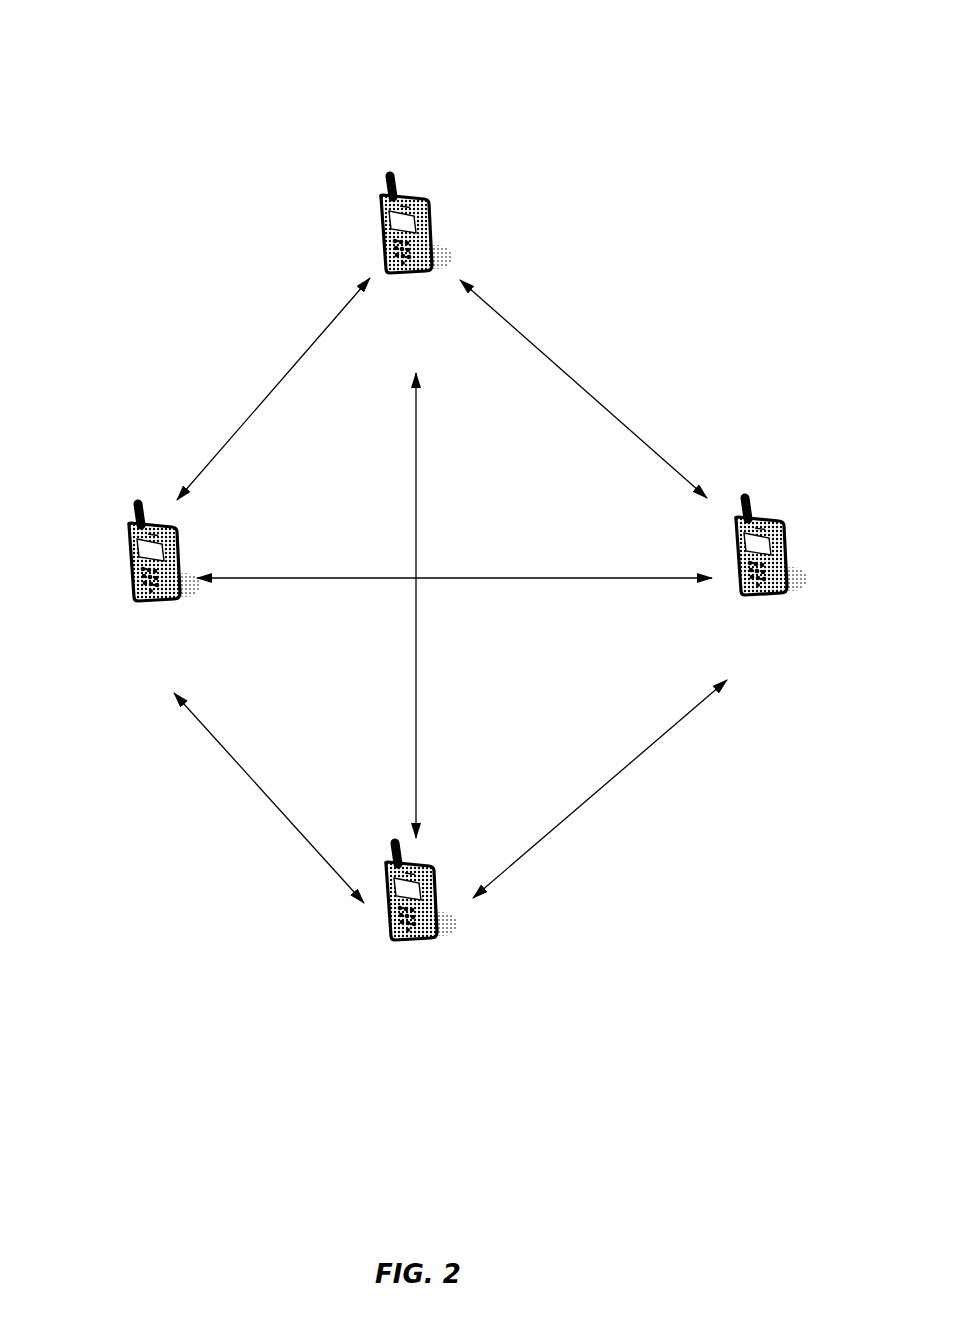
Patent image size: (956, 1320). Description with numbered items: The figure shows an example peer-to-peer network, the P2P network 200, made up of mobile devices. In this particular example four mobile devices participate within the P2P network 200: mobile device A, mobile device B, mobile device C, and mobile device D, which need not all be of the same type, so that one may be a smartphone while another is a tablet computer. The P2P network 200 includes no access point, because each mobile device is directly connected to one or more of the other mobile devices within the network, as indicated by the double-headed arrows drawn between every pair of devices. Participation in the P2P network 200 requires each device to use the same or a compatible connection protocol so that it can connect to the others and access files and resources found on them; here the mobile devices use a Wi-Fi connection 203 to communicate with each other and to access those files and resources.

The P2P network 200 is at (134, 106).
The Wi-Fi connection 203 is at (450, 590).